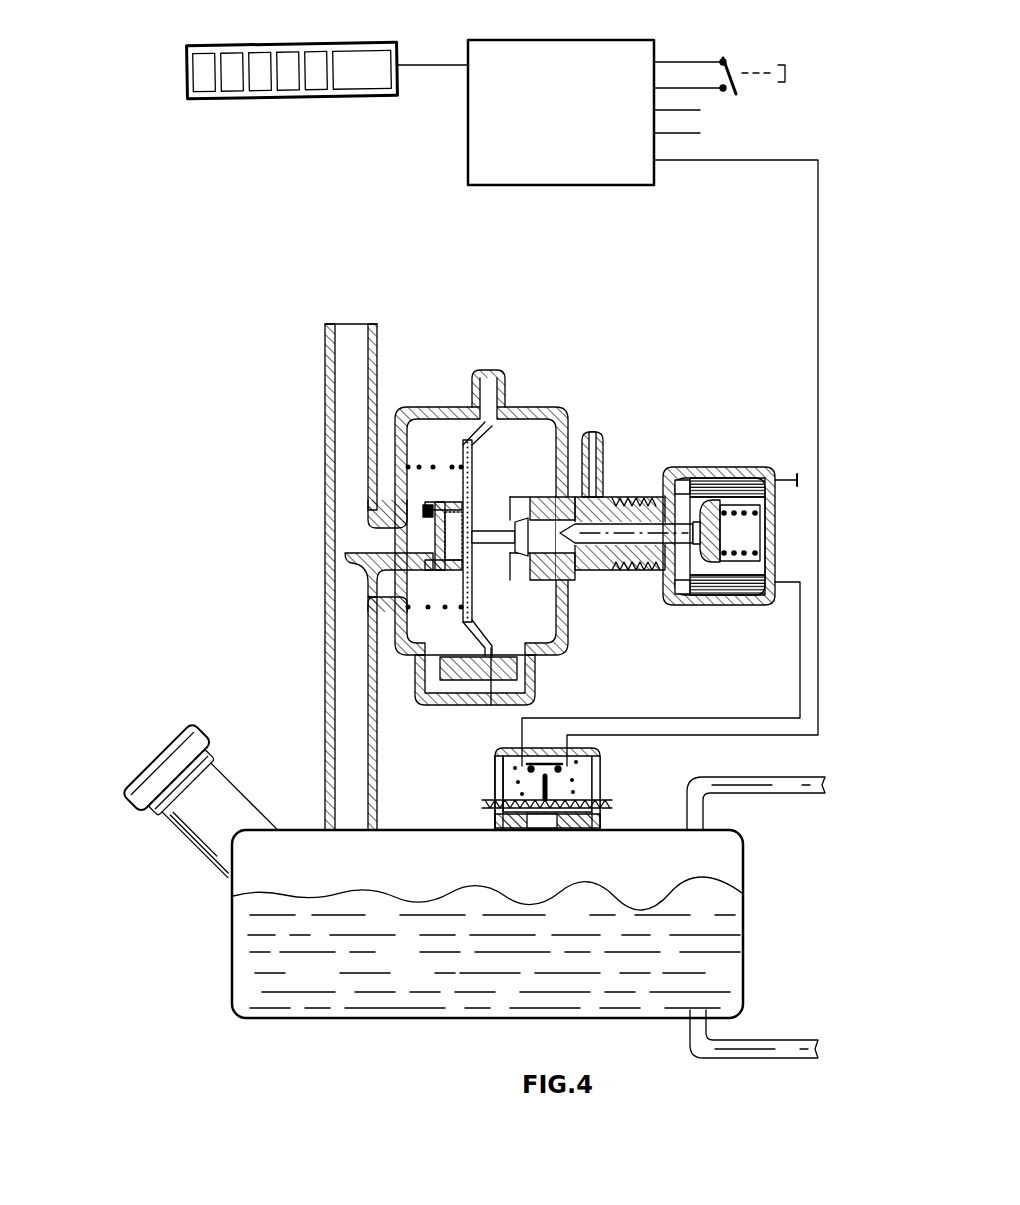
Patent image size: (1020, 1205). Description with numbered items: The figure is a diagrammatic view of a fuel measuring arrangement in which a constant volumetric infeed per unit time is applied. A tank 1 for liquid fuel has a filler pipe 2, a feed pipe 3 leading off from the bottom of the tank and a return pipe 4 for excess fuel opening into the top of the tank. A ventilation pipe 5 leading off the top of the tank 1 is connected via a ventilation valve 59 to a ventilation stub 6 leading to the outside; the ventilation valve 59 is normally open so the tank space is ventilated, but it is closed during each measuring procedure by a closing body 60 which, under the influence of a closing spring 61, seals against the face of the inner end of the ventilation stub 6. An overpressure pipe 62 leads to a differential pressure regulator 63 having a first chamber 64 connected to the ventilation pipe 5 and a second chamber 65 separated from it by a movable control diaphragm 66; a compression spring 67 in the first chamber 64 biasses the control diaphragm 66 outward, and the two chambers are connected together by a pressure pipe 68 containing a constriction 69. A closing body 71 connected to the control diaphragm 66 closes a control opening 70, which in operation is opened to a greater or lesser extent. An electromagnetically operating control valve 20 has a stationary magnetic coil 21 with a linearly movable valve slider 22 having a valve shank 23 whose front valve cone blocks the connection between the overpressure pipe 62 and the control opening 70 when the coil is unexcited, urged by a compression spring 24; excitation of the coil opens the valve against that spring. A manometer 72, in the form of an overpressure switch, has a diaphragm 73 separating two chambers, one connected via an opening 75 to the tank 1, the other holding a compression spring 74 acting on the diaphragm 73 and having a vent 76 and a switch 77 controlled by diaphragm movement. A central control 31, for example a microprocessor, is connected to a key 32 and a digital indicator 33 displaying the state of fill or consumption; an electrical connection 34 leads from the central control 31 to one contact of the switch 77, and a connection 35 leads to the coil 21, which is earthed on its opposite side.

The tank 1 is at (245, 948).
The filler pipe 2 is at (212, 832).
The feed pipe 3 is at (781, 1046).
The return pipe 4 is at (786, 796).
The ventilation pipe 5 is at (352, 722).
The ventilation stub 6 is at (345, 350).
The control valve 20 is at (730, 506).
The magnetic coil 21 is at (729, 604).
The valve slider 22 is at (707, 500).
The valve shank 23 is at (640, 567).
The compression spring 24 is at (745, 500).
The central control 31 is at (559, 125).
The key 32 is at (745, 70).
The indicator 33 is at (283, 96).
The electrical connection 34 is at (815, 308).
The connection 35 is at (800, 672).
The ventilation valve 59 is at (408, 577).
The closing body 60 is at (432, 531).
The closing spring 61 is at (428, 508).
The overpressure pipe 62 is at (598, 440).
The differential pressure regulator 63 is at (521, 384).
The first chamber 64 is at (448, 430).
The second chamber 65 is at (546, 432).
The control diaphragm 66 is at (466, 438).
The compression spring 67 is at (432, 460).
The pressure pipe 68 is at (442, 690).
The constriction 69 is at (538, 668).
The control opening 70 is at (566, 604).
The closing body 71 is at (560, 555).
The manometer 72 is at (534, 807).
The diaphragm 73 is at (585, 812).
The compression spring 74 is at (570, 792).
The opening 75 is at (546, 812).
The vent 76 is at (496, 776).
The switch 77 is at (532, 768).